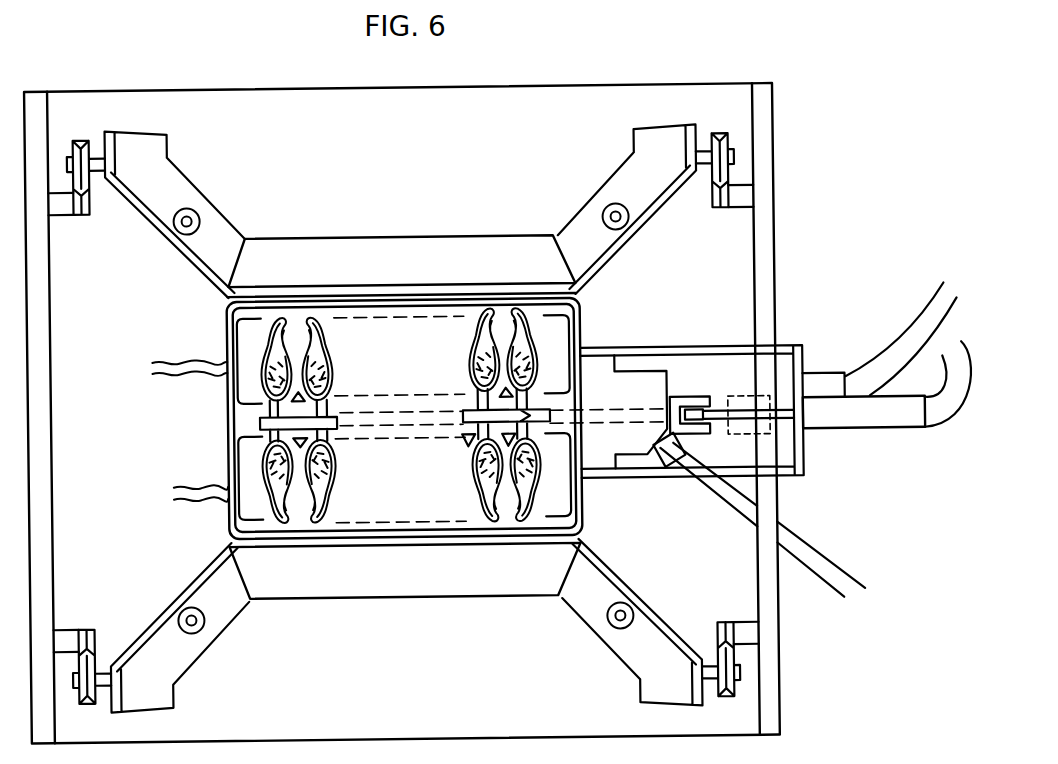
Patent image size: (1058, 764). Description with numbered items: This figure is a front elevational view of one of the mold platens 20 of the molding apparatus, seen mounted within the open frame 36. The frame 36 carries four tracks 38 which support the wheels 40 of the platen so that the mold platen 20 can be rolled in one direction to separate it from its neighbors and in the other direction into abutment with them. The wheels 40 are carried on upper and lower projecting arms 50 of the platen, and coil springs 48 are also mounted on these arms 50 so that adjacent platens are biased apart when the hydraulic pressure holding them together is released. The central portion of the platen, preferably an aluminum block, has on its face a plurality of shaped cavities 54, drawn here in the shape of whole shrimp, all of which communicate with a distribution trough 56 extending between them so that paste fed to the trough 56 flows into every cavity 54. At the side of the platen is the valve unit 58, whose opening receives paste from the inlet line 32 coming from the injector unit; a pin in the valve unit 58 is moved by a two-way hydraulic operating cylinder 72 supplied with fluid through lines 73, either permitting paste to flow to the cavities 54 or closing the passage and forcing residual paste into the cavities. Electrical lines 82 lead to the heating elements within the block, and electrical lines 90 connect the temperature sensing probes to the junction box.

The mold platen 20 is at (496, 208).
The inlet line 32 is at (816, 556).
The open frame 36 is at (54, 458).
The track 38 is at (727, 622).
The wheel 40 is at (727, 693).
The coil spring 48 is at (612, 632).
The projecting arm 50 is at (407, 590).
The shaped cavity 54 is at (335, 464).
The distribution trough 56 is at (470, 418).
The valve unit 58 is at (704, 346).
The two-way hydraulic operating cylinder 72 is at (862, 420).
The hydraulic lines 73 is at (950, 415).
The electrical lines 82 is at (200, 500).
The electrical lines 90 is at (194, 359).